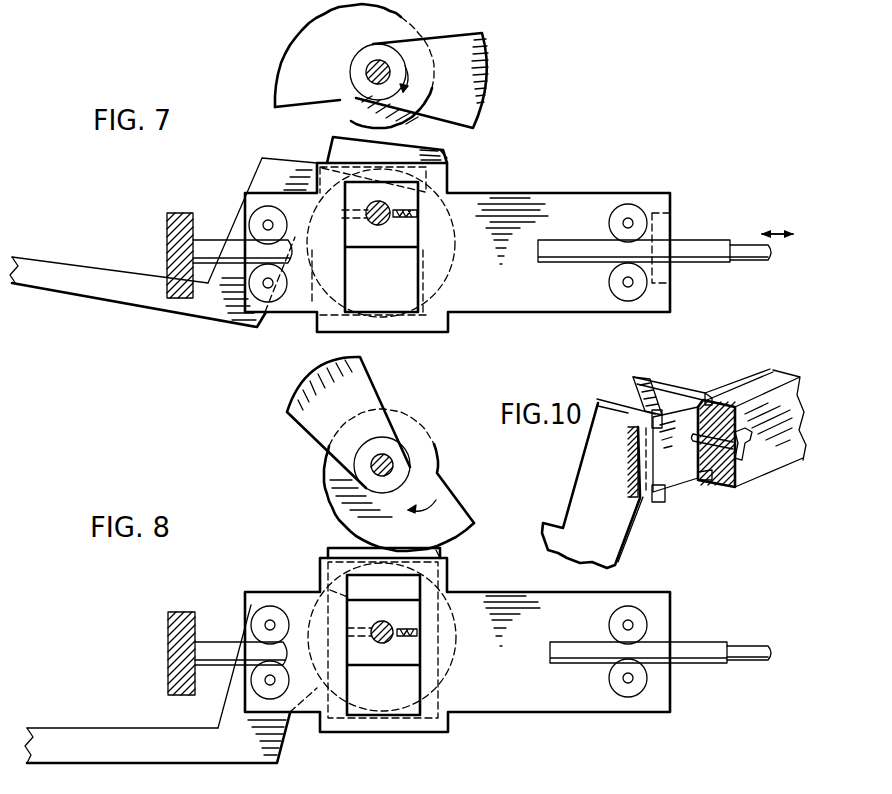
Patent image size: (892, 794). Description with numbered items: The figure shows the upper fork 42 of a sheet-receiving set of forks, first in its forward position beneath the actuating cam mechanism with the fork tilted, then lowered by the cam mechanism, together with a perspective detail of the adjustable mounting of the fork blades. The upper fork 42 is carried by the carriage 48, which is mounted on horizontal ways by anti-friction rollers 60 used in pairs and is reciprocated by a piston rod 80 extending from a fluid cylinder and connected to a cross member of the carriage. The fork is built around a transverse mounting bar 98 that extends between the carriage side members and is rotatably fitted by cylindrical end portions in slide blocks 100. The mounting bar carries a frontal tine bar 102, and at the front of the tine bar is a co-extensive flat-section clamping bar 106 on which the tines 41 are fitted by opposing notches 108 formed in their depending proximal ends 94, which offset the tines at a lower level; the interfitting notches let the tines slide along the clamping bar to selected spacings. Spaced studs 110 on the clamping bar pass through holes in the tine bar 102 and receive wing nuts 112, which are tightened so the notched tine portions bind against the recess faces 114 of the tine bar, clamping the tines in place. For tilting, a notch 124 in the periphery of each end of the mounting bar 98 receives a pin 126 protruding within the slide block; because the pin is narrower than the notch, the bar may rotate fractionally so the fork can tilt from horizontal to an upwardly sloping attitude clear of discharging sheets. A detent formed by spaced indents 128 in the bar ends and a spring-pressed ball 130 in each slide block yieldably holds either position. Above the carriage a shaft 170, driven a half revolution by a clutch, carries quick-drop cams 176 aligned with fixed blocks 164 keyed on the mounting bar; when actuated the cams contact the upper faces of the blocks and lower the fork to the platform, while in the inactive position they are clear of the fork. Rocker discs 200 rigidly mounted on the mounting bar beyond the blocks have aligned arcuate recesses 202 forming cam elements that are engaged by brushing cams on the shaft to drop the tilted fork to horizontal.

In FIG. 10, the tines 41 is at (630, 375).
In FIG. 7, the upper fork 42 is at (251, 175).
In FIG. 8, the upper fork 42 is at (258, 761).
In FIG. 10, the upper fork 42 is at (712, 354).
In FIG. 7, the carriage 48 is at (553, 192).
In FIG. 8, the carriage 48 is at (550, 717).
In FIG. 7, the anti-friction rollers 60 is at (618, 208).
In FIG. 8, the anti-friction rollers 60 is at (627, 694).
In FIG. 7, the piston rod 80 is at (747, 240).
In FIG. 8, the piston rod 80 is at (747, 643).
In FIG. 7, the depending proximal ends 94 is at (232, 225).
In FIG. 8, the depending proximal ends 94 is at (227, 702).
In FIG. 10, the depending proximal ends 94 is at (600, 452).
In FIG. 7, the transverse mounting bar 98 is at (382, 202).
In FIG. 8, the transverse mounting bar 98 is at (383, 621).
In FIG. 7, the slide blocks 100 is at (369, 243).
In FIG. 8, the slide blocks 100 is at (369, 660).
In FIG. 10, the tine bar 102 is at (757, 470).
In FIG. 10, the clamping bar 106 is at (675, 472).
In FIG. 10, the opposing notches 108 is at (657, 408).
In FIG. 10, the studs 110 is at (750, 453).
In FIG. 10, the wing nuts 112 is at (752, 435).
In FIG. 10, the recess faces 114 is at (708, 397).
In FIG. 7, the notch 124 is at (356, 210).
In FIG. 8, the notch 124 is at (373, 640).
In FIG. 7, the pin 126 is at (363, 226).
In FIG. 8, the pin 126 is at (360, 627).
In FIG. 7, the indents 128 is at (393, 227).
In FIG. 8, the indents 128 is at (395, 630).
In FIG. 7, the spring-pressed ball 130 is at (393, 208).
In FIG. 8, the spring-pressed ball 130 is at (395, 640).
In FIG. 7, the fixed blocks 164 is at (342, 135).
In FIG. 8, the fixed blocks 164 is at (340, 552).
In FIG. 7, the shaft 170 is at (370, 62).
In FIG. 8, the shaft 170 is at (393, 460).
In FIG. 7, the quick-drop cams 176 is at (290, 63).
In FIG. 8, the quick-drop cams 176 is at (348, 510).
In FIG. 7, the rocker discs 200 is at (330, 157).
In FIG. 8, the rocker discs 200 is at (456, 620).
In FIG. 7, the arcuate recesses 202 is at (441, 153).
In FIG. 8, the arcuate recesses 202 is at (443, 552).